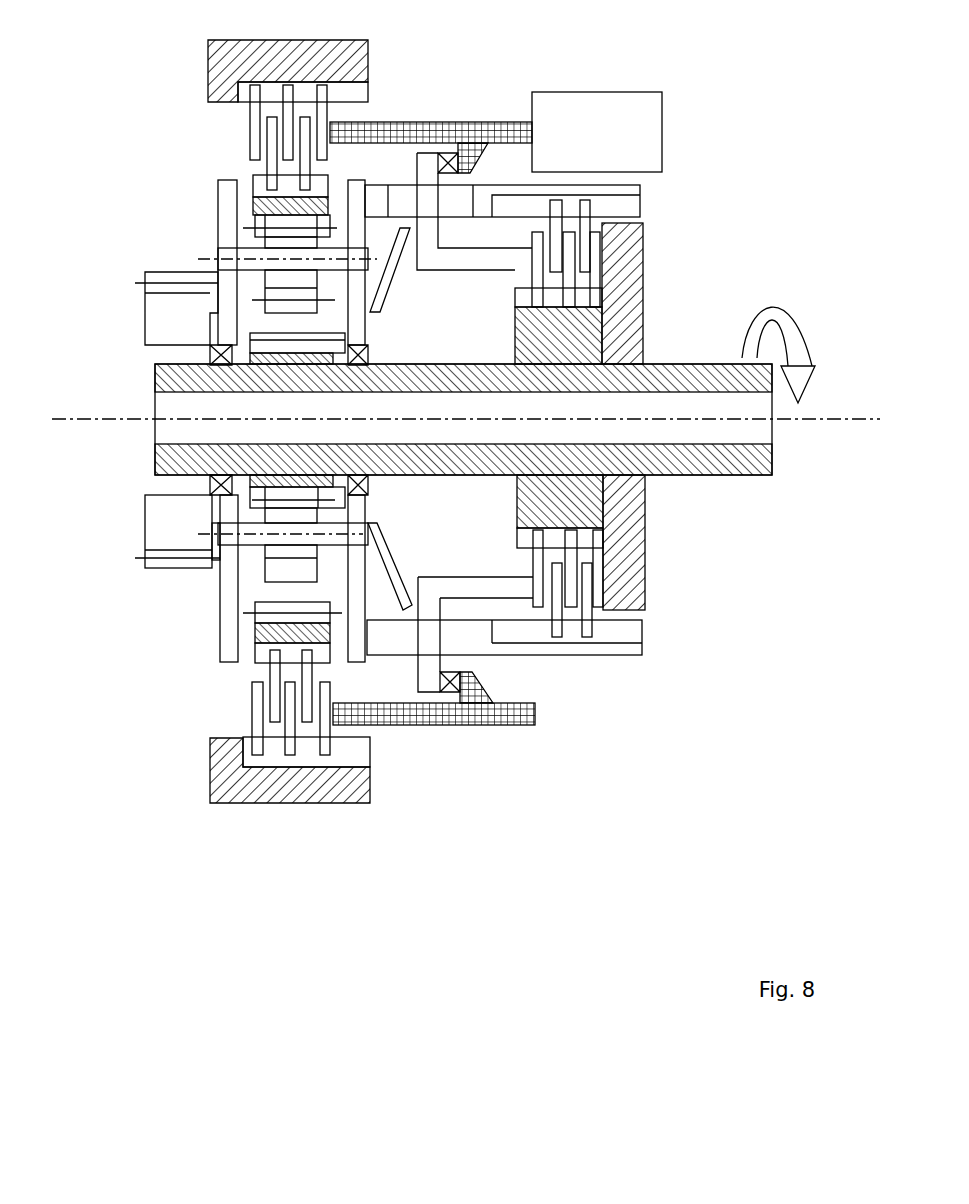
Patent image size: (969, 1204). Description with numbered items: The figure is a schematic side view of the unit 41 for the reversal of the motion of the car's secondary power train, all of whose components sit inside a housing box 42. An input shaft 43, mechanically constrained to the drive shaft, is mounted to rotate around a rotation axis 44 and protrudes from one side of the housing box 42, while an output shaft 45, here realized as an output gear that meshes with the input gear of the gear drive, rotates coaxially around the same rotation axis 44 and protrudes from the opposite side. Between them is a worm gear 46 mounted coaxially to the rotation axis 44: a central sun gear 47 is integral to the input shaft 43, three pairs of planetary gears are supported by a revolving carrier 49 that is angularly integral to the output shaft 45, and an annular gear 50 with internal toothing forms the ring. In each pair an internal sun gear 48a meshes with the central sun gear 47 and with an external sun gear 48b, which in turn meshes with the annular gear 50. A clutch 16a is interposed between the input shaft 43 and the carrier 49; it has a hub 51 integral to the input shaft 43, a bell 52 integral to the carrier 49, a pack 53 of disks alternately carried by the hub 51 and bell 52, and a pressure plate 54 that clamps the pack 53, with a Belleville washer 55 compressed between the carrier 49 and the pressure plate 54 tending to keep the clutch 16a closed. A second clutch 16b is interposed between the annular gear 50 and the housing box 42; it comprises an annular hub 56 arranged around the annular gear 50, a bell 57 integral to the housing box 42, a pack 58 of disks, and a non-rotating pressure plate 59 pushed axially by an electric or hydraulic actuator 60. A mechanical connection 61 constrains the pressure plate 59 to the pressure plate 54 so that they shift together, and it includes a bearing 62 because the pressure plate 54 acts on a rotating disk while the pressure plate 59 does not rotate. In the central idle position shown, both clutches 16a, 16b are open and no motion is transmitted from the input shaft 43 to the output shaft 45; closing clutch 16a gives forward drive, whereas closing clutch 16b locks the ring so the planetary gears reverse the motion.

The unit for the reversal of the motion 41 is at (205, 921).
The housing box 42 is at (212, 60).
The input shaft 43 is at (722, 466).
The rotation axis 44 is at (75, 422).
The output shaft 45 is at (140, 560).
The worm gear 46 is at (168, 196).
The central sun gear 47 is at (330, 340).
The internal sun gear 48a is at (282, 578).
The external sun gear 48b is at (290, 240).
The revolving carrier 49 is at (232, 618).
The annular gear 50 is at (308, 611).
The hub 51 is at (530, 506).
The bell 52 is at (618, 632).
The pack of disks 53 is at (570, 597).
The pressure plate 54 is at (476, 256).
The Belleville washer 55 is at (392, 557).
The annular hub 56 is at (263, 660).
The bell 57 is at (352, 755).
The pack of disks 58 is at (290, 725).
The pressure plate 59 is at (517, 727).
The actuator 60 is at (496, 132).
The mechanical connection 61 is at (472, 688).
The bearing 62 is at (449, 692).
The clutch 16a is at (557, 742).
The clutch 16b is at (204, 132).